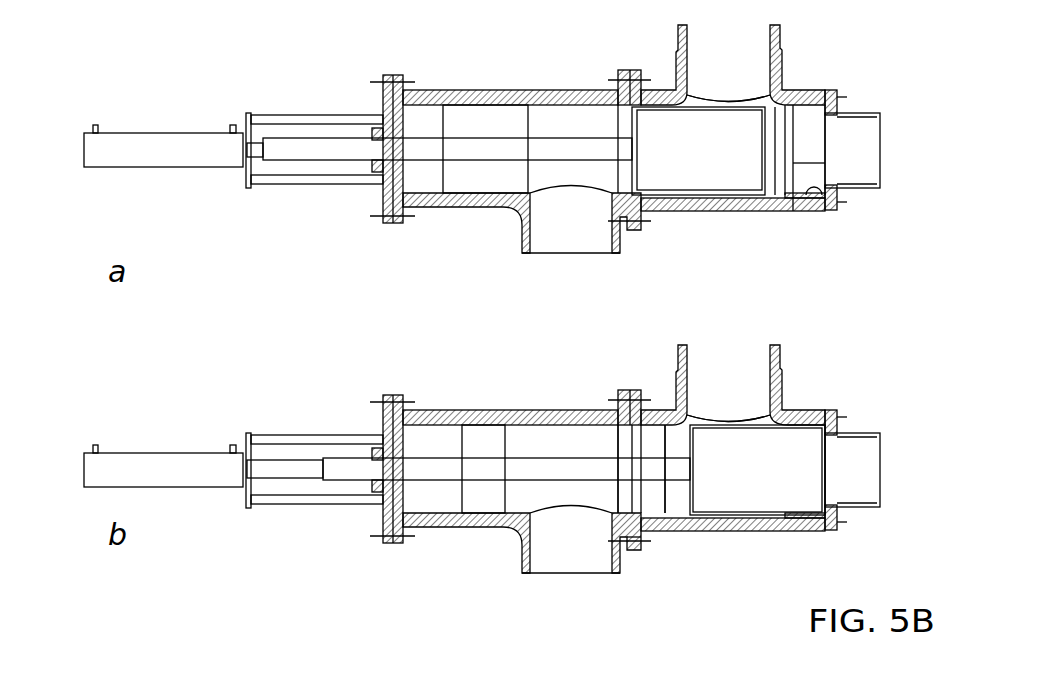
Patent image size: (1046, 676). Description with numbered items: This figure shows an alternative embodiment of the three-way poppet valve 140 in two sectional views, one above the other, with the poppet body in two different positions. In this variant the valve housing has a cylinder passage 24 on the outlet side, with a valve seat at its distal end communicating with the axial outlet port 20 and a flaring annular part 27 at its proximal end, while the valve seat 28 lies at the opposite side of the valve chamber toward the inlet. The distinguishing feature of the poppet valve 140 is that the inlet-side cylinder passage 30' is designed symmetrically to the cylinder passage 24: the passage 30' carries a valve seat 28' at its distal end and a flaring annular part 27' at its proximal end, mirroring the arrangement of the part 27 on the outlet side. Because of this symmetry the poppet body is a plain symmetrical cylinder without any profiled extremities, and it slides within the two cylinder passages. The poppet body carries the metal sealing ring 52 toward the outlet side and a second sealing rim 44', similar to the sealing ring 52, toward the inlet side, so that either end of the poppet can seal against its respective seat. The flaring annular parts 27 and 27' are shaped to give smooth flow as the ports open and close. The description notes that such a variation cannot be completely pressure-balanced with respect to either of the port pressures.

The three-way poppet valve 140 is at (483, 73).
The metal sealing ring 52 is at (768, 102).
The cylinder passage 24 is at (809, 150).
The outlet port 20 is at (867, 166).
The flaring annular part 27 is at (765, 235).
The second annular valve seat 28 is at (835, 232).
The cylinder passage 30' is at (590, 433).
The flaring annular part 27' is at (637, 433).
The second sealing rim 44' is at (727, 411).
The valve seat 28' is at (662, 558).